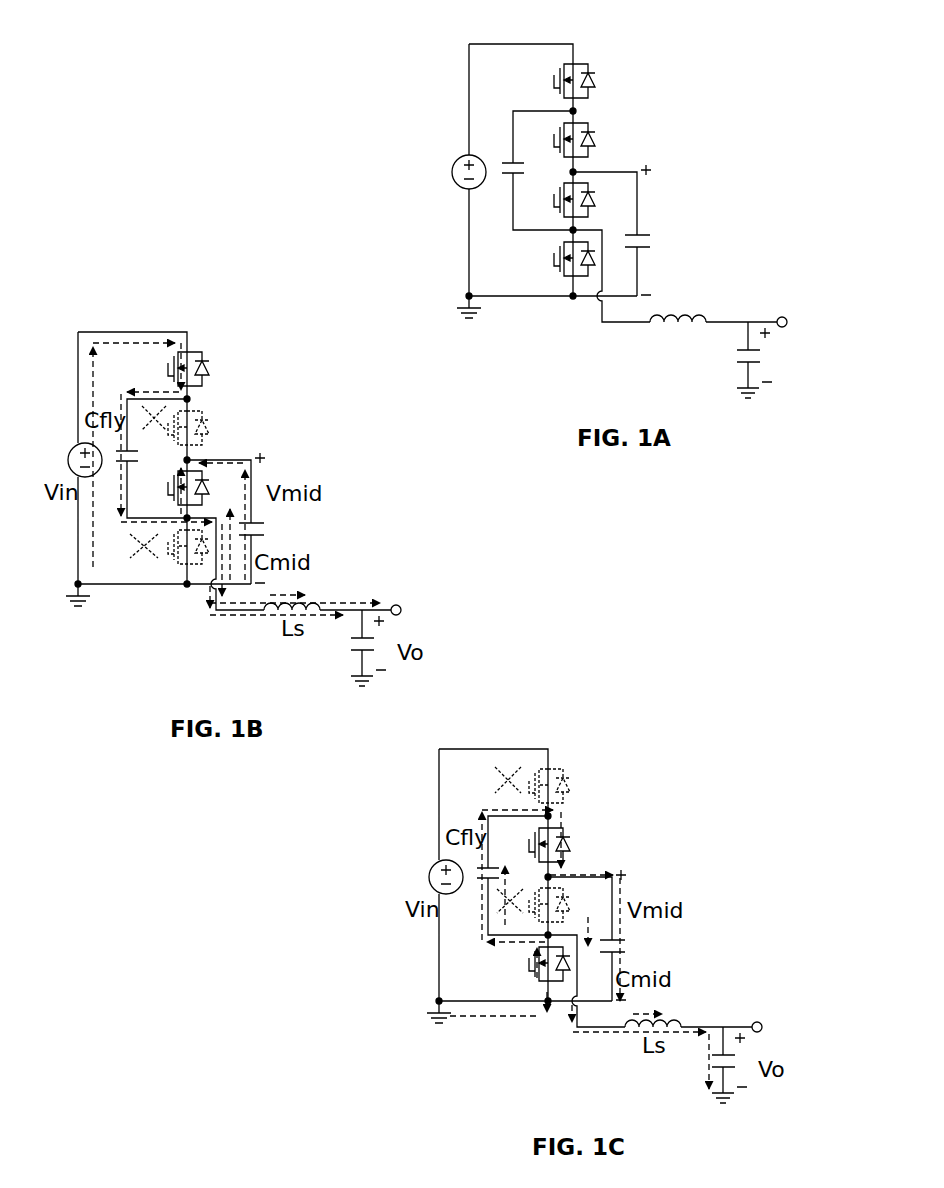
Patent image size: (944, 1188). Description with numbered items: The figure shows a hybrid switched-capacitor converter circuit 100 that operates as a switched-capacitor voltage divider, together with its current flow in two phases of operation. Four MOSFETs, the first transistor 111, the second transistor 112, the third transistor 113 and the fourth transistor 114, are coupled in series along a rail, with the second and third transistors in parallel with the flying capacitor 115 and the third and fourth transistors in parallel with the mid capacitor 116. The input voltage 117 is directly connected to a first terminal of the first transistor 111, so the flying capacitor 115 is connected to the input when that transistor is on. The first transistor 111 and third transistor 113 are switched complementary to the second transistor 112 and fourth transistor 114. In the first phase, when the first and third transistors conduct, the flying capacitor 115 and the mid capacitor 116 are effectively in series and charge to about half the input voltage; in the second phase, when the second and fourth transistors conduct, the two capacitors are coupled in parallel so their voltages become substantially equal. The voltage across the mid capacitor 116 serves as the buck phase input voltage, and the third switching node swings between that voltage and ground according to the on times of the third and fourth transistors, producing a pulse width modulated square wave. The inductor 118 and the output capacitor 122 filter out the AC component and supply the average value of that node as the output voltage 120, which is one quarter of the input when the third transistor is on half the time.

In FIG. 1A, the hybrid switched-capacitor converter circuit 100 is at (731, 60).
In FIG. 1B, the hybrid switched-capacitor converter circuit 100 is at (265, 340).
In FIG. 1C, the hybrid switched-capacitor converter circuit 100 is at (628, 757).
In FIG. 1A, the transistor Q1 111 is at (565, 63).
In FIG. 1A, the transistor Q2 112 is at (561, 126).
In FIG. 1A, the transistor Q3 113 is at (560, 217).
In FIG. 1A, the transistor Q4 114 is at (563, 278).
In FIG. 1A, the flying capacitor CFLY 115 is at (513, 178).
In FIG. 1A, the capacitor CMID 116 is at (650, 235).
In FIG. 1A, the input voltage VIN 117 is at (452, 172).
In FIG. 1A, the inductor LS 118 is at (700, 318).
In FIG. 1A, the output voltage VOUT 120 is at (785, 316).
In FIG. 1A, the output capacitor 122 is at (737, 362).